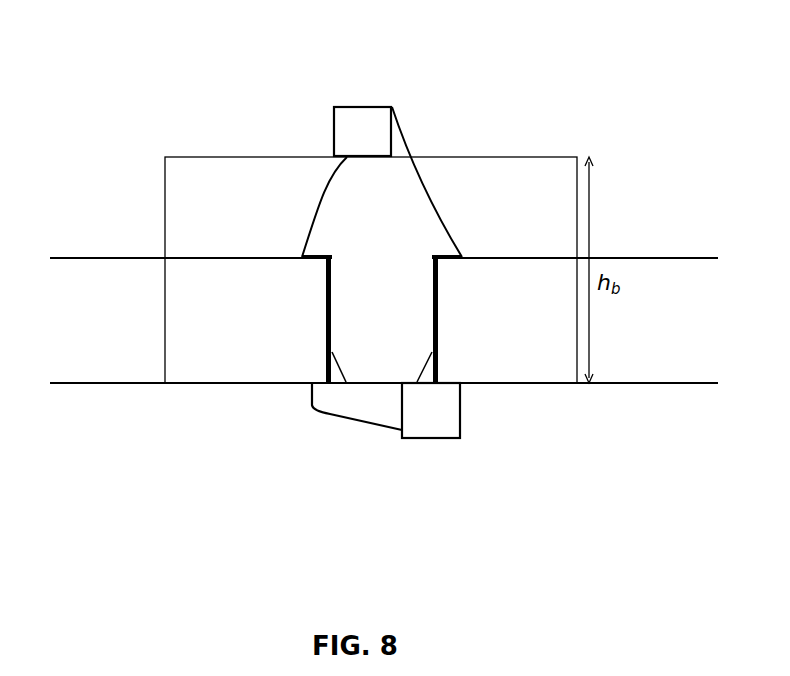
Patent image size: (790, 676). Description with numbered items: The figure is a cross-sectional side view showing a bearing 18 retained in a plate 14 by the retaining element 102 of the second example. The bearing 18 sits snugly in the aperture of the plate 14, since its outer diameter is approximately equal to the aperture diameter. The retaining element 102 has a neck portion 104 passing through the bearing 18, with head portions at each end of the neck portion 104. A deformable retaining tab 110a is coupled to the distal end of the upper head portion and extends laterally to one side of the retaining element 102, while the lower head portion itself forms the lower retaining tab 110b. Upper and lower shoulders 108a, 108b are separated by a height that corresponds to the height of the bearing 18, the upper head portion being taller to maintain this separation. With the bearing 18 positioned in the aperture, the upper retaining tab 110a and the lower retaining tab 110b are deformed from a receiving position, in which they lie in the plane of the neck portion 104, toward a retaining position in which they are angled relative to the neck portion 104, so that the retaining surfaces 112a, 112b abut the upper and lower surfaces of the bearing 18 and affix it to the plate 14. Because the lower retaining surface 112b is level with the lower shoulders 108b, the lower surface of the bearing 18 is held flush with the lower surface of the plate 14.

The plate 14 is at (88, 280).
The bearing 18 is at (214, 210).
The retaining element 102 is at (380, 273).
The neck portion 104 is at (362, 332).
The upper shoulder 108a is at (330, 237).
The lower shoulder 108b is at (348, 398).
The deformable retaining tab 110a is at (364, 135).
The lower retaining tab 110b is at (428, 410).
The upper retaining surface 112a is at (447, 262).
The lower retaining surface 112b is at (326, 380).